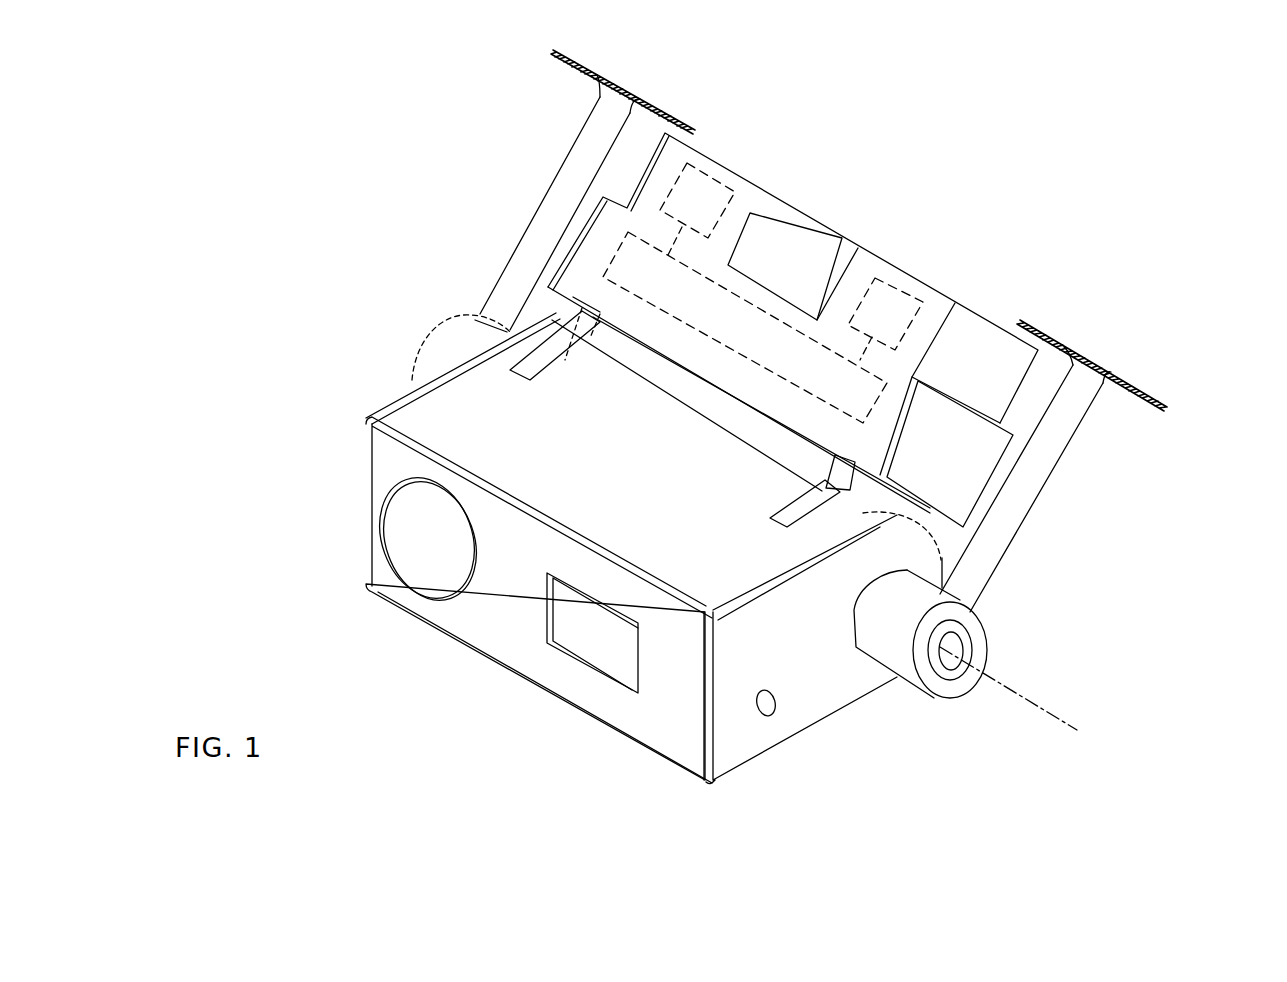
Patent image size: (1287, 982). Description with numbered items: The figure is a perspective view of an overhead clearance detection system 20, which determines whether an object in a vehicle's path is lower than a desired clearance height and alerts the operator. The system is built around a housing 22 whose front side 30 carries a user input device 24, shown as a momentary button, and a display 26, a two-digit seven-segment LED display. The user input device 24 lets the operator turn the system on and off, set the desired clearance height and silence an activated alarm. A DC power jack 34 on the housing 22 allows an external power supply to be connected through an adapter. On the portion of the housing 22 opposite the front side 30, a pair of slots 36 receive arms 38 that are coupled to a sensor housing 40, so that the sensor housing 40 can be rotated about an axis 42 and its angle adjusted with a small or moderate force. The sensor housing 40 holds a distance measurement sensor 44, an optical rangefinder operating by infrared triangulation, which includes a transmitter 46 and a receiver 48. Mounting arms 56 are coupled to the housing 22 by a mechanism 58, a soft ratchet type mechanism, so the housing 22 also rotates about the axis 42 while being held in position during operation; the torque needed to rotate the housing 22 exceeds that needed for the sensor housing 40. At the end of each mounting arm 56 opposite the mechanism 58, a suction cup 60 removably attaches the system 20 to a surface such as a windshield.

The overhead clearance detection system 20 is at (254, 194).
The housing 22 is at (365, 505).
The user input device 24 is at (432, 544).
The display 26 is at (595, 633).
The front side 30 is at (670, 712).
The DC power jack 34 is at (768, 710).
The slots 36 is at (545, 378).
The arms 38 is at (587, 330).
The sensor housing 40 is at (707, 158).
The axis 42 is at (1055, 715).
The distance measurement sensor 44 is at (880, 392).
The transmitter 46 is at (723, 210).
The receiver 48 is at (892, 287).
The mounting arms 56 is at (543, 200).
The mechanism 58 is at (443, 323).
The suction cup 60 is at (567, 60).